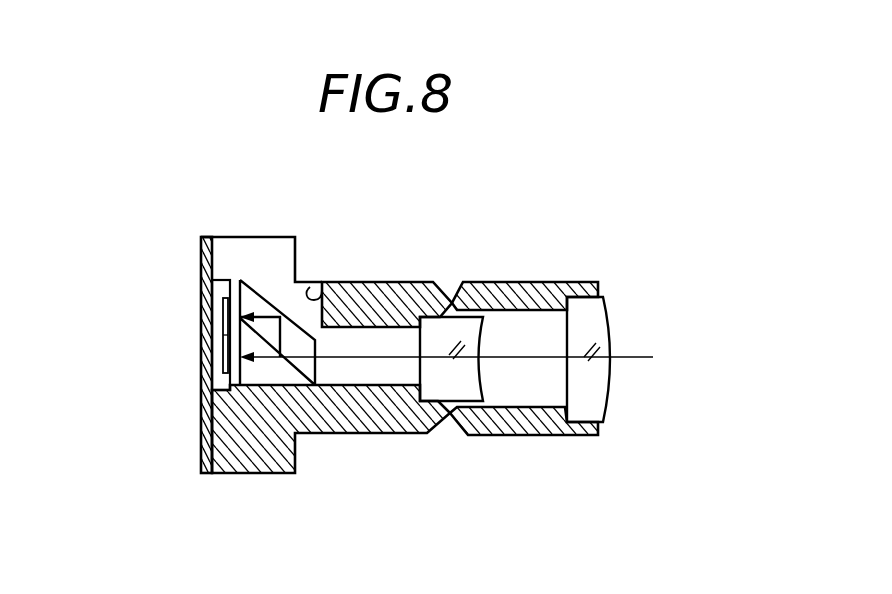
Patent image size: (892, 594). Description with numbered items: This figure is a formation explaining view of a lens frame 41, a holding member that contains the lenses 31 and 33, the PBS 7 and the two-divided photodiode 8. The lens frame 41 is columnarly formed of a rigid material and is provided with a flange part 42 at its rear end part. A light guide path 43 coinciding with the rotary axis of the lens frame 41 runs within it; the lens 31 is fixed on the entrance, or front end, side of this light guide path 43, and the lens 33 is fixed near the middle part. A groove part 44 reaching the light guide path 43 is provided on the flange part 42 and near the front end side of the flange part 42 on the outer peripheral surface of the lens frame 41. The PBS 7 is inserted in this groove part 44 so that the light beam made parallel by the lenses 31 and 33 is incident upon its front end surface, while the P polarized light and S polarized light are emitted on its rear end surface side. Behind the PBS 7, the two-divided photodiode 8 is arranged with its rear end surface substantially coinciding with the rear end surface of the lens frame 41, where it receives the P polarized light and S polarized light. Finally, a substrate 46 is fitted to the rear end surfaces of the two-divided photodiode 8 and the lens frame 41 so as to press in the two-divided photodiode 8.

The PBS 7 is at (262, 292).
The two-divided photodiode 8 is at (215, 277).
The lens 31 is at (605, 318).
The lens 33 is at (439, 402).
The lens frame 41 is at (416, 282).
The flange part 42 is at (252, 475).
The light guide path 43 is at (537, 392).
The groove part 44 is at (310, 287).
The substrate 46 is at (211, 356).